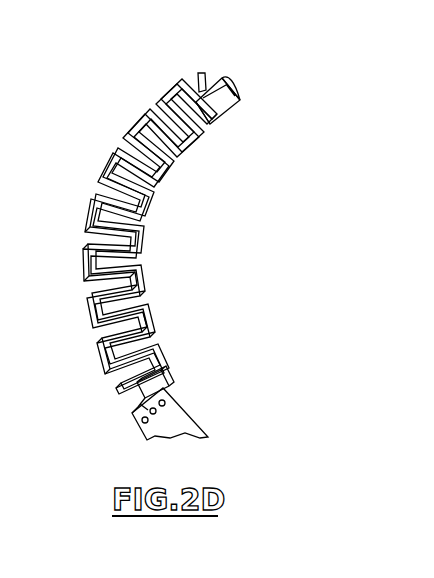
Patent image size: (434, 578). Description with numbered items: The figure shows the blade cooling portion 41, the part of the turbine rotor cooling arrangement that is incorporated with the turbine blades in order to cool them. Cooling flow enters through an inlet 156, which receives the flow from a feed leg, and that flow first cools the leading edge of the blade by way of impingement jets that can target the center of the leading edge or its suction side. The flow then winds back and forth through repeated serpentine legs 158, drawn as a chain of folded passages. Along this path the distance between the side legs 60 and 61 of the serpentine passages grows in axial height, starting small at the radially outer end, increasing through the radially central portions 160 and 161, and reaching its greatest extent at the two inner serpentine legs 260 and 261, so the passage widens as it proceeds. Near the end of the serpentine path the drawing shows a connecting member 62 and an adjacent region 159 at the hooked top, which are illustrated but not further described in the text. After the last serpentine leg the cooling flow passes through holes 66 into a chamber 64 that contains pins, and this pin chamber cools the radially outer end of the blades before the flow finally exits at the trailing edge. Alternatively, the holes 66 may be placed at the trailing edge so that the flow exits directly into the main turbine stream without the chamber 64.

The blade cooling portion 41 is at (68, 393).
The side leg 60 is at (176, 92).
The side leg 61 is at (178, 157).
The connector block 62 is at (163, 376).
The chamber 64 is at (174, 422).
The holes 66 is at (132, 407).
The inlet 156 is at (199, 73).
The serpentine legs 158 is at (209, 121).
The hook arm 159 is at (226, 84).
The radially central portion 160 is at (86, 248).
The radially central portion 161 is at (138, 290).
The inner serpentine leg 260 is at (110, 380).
The inner serpentine leg 261 is at (152, 352).